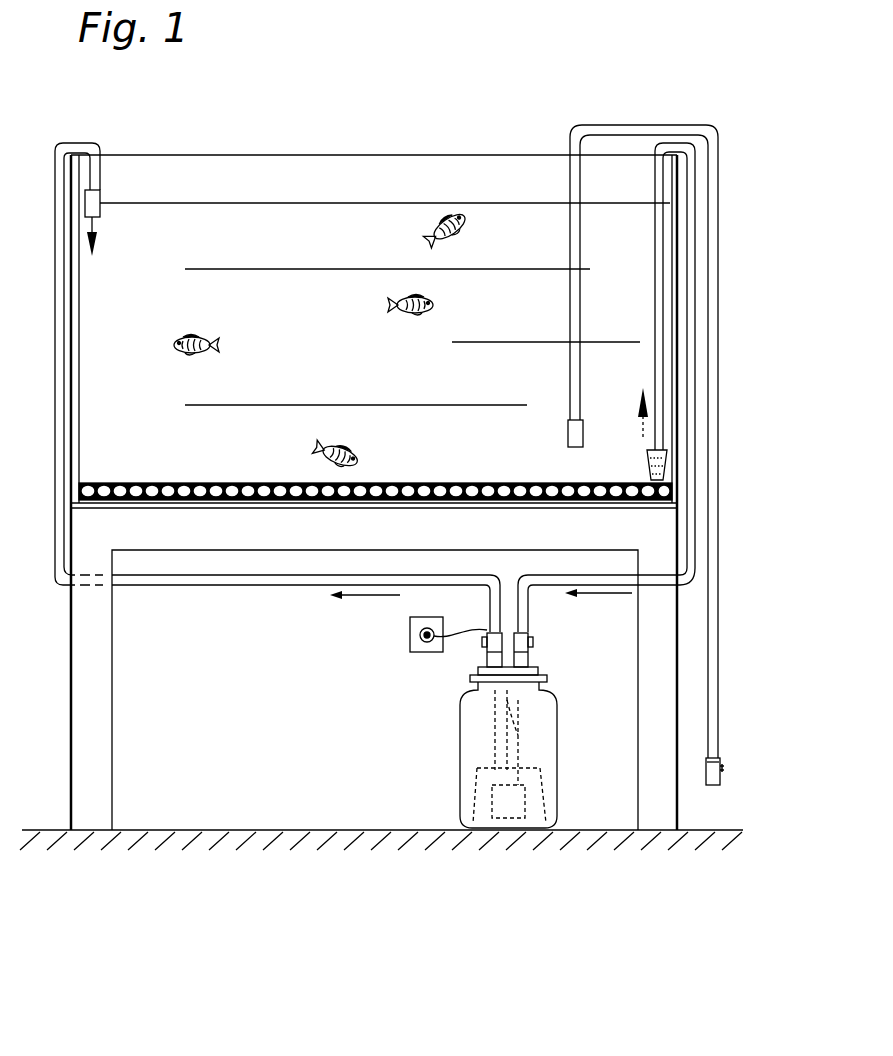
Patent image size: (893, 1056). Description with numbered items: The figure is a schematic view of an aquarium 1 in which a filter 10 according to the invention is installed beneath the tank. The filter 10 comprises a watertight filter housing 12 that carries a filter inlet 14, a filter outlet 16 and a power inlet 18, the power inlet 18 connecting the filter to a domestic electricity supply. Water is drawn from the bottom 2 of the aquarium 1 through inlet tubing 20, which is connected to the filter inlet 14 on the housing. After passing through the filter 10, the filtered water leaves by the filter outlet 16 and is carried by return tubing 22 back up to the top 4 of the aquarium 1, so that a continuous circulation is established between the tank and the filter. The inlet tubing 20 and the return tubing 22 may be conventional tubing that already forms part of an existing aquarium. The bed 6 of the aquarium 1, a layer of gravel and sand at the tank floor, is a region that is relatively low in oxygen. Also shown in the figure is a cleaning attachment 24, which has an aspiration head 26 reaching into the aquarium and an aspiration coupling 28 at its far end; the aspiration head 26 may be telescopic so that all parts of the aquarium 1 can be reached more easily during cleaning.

The aquarium 1 is at (421, 117).
The bottom 2 is at (90, 390).
The top 4 is at (197, 156).
The bed 6 is at (128, 486).
The filter 10 is at (446, 775).
The filter housing 12 is at (553, 802).
The filter inlet 14 is at (528, 652).
The filter outlet 16 is at (487, 655).
The power inlet 18 is at (452, 635).
The inlet tubing 20 is at (690, 312).
The return tubing 22 is at (60, 335).
The cleaning attachment 24 is at (713, 433).
The aspiration head 26 is at (571, 432).
The aspiration coupling 28 is at (716, 776).